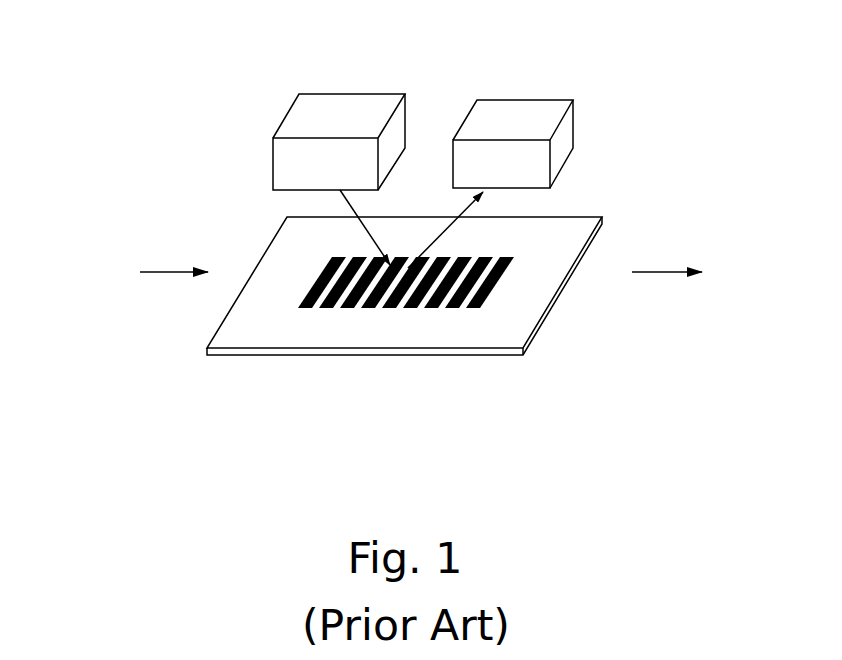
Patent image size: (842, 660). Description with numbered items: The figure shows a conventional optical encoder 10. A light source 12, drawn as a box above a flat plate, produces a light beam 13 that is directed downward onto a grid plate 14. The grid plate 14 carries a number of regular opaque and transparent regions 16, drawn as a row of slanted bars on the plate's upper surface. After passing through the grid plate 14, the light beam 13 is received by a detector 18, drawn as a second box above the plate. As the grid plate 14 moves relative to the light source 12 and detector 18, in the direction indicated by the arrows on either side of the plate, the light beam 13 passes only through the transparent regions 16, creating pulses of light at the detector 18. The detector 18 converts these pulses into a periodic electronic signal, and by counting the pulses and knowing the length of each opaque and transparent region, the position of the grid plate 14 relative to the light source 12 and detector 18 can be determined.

The optical encoder 10 is at (212, 143).
The light source 12 is at (284, 120).
The light beam 13 is at (353, 214).
The grid plate 14 is at (550, 310).
The regular opaque and transparent regions 16 is at (533, 241).
The detector 18 is at (573, 133).